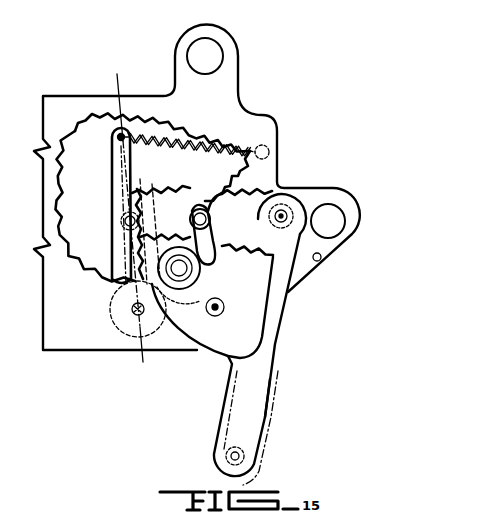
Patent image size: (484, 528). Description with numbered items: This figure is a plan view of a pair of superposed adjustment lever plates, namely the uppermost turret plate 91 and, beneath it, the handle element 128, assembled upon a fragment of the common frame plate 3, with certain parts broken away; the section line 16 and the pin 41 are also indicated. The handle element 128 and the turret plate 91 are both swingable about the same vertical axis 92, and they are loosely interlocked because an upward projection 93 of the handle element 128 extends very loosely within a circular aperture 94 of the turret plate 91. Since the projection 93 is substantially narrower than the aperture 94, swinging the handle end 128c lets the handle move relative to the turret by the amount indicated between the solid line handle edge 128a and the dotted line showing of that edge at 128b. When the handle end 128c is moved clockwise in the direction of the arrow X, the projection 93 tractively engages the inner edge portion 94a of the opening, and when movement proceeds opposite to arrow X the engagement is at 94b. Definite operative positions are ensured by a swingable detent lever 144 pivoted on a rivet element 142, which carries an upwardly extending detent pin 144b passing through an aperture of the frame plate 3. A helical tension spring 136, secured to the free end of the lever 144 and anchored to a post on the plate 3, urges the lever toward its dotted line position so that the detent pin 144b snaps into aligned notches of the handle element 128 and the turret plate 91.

The frame plate 3 is at (248, 123).
The section line 16- 16 is at (137, 105).
The helical tension spring 136 is at (195, 138).
The pin 41 is at (200, 211).
The vertical axis 92 is at (283, 212).
The detent lever 144 is at (123, 245).
The detent pin 144b is at (126, 220).
The rivet element 142 is at (131, 311).
The circular aperture 94 is at (220, 303).
The inner edge portion of circular opening 94a is at (208, 306).
The inner edge portion of circular opening 94b is at (212, 307).
The upward projection 93 is at (208, 309).
The turret plate 91 is at (222, 340).
The handle element 128 is at (263, 343).
The solid line handle edge 128a is at (266, 418).
The dotted line handle edge 128b is at (266, 433).
The handle end 128c is at (228, 456).
The arrow X is at (281, 472).